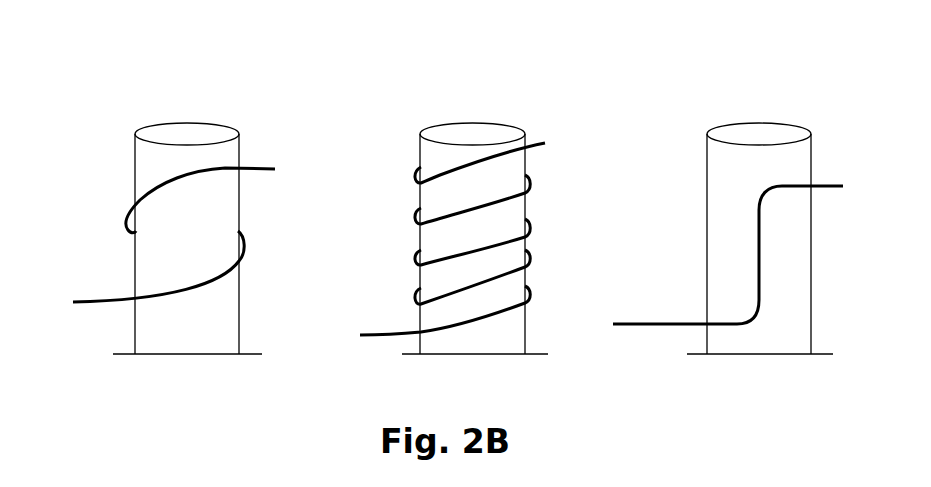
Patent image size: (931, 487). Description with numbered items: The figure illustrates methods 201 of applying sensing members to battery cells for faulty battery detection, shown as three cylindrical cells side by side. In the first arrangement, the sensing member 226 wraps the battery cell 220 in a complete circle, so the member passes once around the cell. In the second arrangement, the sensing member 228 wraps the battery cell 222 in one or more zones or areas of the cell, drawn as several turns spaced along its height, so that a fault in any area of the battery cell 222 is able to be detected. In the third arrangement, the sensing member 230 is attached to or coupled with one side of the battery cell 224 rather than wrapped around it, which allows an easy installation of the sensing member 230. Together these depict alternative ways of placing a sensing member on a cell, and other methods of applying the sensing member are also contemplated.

The methods of applying the sensing members 201 is at (145, 20).
The battery cell 220 is at (135, 108).
The battery cell 222 is at (423, 108).
The battery cell 224 is at (708, 108).
The sensing member 226 is at (92, 300).
The sensing member 228 is at (380, 331).
The sensing member 230 is at (665, 321).